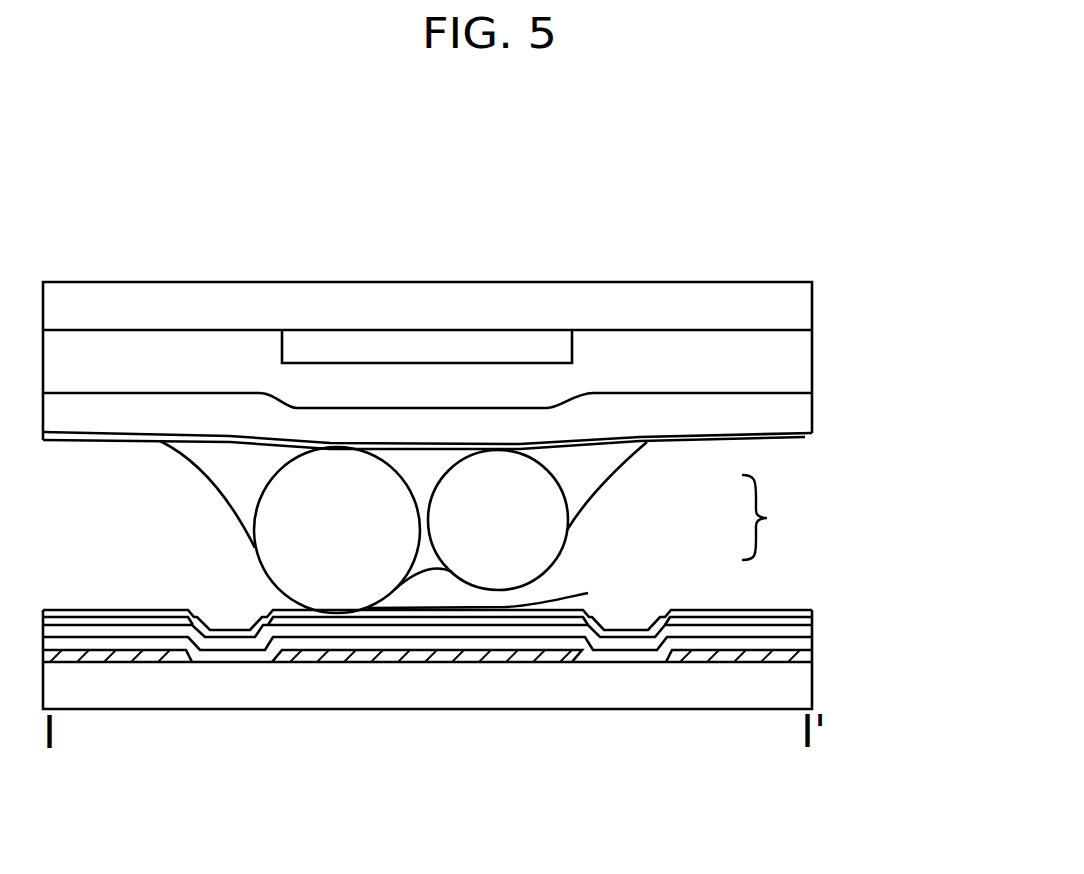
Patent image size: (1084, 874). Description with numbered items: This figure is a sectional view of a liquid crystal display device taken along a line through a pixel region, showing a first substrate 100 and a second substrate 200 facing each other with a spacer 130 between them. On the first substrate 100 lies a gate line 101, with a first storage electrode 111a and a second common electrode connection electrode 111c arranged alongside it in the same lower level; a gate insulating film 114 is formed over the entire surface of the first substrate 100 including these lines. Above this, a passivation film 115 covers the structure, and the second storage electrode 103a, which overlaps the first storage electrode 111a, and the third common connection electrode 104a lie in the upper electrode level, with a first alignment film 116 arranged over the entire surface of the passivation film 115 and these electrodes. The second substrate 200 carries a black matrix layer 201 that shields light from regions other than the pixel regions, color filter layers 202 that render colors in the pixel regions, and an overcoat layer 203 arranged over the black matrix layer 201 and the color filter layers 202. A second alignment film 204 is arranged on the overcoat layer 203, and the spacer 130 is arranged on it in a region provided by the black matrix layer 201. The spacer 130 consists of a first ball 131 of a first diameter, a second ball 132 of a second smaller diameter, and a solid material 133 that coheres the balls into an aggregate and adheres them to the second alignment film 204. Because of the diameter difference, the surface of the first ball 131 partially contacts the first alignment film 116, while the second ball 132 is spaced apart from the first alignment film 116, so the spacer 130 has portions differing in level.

The first substrate 100 is at (540, 690).
The gate line 101 is at (412, 663).
The second storage electrode 103a is at (128, 625).
The third common connection electrode 104a is at (808, 620).
The first storage electrode 111a is at (162, 662).
The second common electrode connection electrode 111c is at (682, 658).
The gate insulating film 114 is at (773, 640).
The passivation film 115 is at (793, 628).
The first alignment film 116 is at (797, 608).
The spacer 130 is at (501, 527).
The first ball 131 is at (509, 588).
The second ball 132 is at (532, 557).
The solid material 133 is at (577, 482).
The second substrate 200 is at (798, 303).
The black matrix layer 201 is at (547, 343).
The color filter layer 202 is at (798, 360).
The overcoat layer 203 is at (798, 415).
The second alignment film 204 is at (805, 437).